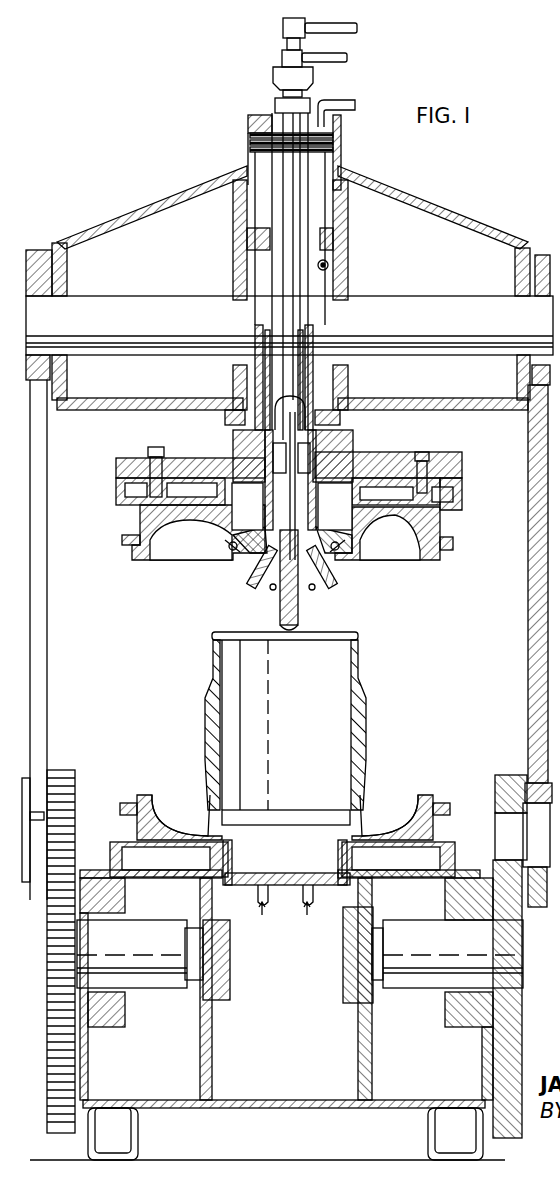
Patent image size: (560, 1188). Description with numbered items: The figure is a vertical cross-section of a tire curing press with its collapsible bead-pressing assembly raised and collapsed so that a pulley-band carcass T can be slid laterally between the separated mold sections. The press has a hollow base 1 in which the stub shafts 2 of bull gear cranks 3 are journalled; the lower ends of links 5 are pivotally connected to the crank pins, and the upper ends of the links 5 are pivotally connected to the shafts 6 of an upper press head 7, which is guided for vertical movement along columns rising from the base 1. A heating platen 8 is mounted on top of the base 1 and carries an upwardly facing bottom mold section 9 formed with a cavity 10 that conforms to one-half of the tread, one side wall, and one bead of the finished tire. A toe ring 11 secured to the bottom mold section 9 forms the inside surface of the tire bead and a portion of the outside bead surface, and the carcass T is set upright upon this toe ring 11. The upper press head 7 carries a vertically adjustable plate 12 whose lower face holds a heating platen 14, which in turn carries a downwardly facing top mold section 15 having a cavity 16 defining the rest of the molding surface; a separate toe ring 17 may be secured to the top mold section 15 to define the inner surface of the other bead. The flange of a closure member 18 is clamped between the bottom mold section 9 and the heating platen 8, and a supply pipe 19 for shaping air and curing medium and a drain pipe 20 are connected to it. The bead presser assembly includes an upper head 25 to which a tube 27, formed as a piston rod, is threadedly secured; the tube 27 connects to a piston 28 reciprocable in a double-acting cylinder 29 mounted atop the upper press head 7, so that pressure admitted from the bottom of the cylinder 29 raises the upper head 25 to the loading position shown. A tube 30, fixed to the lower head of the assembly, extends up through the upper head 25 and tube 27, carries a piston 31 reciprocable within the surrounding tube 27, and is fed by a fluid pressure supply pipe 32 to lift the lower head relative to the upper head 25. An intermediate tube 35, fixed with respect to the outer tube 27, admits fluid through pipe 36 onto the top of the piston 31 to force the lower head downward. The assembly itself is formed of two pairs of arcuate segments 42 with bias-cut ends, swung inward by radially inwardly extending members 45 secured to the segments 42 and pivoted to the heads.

The hollow base 1 is at (345, 1109).
The stub shafts 2 is at (131, 952).
The bull gear cranks 3 is at (57, 958).
The links 5 is at (40, 758).
The shafts 6 is at (133, 331).
The upper press head 7 is at (430, 207).
The heating platen 8 is at (452, 863).
The bottom mold section 9 is at (445, 814).
The cavity 10 is at (385, 799).
The toe ring 11 is at (306, 817).
The vertically adjustable plate 12 is at (378, 456).
The heating platen 14 is at (463, 500).
The top mold section 15 is at (447, 540).
The cavity 16 is at (395, 517).
The toe ring 17 is at (355, 540).
The closure member 18 is at (296, 876).
The supply pipe 19 is at (272, 903).
The drain pipe 20 is at (316, 903).
The upper head 25 is at (310, 520).
The tube 27 is at (300, 316).
The piston 28 is at (325, 151).
The double-acting cylinder 29 is at (338, 128).
The tube 30 is at (260, 572).
The piston 31 is at (258, 497).
The fluid pressure supply pipe 32 is at (345, 30).
The intermediate tube 35 is at (293, 396).
The pipe 36 is at (338, 60).
The arcuate segments 42 is at (230, 549).
The radially inwardly extending members 45 is at (266, 592).
The pulley-band carcass T is at (364, 716).